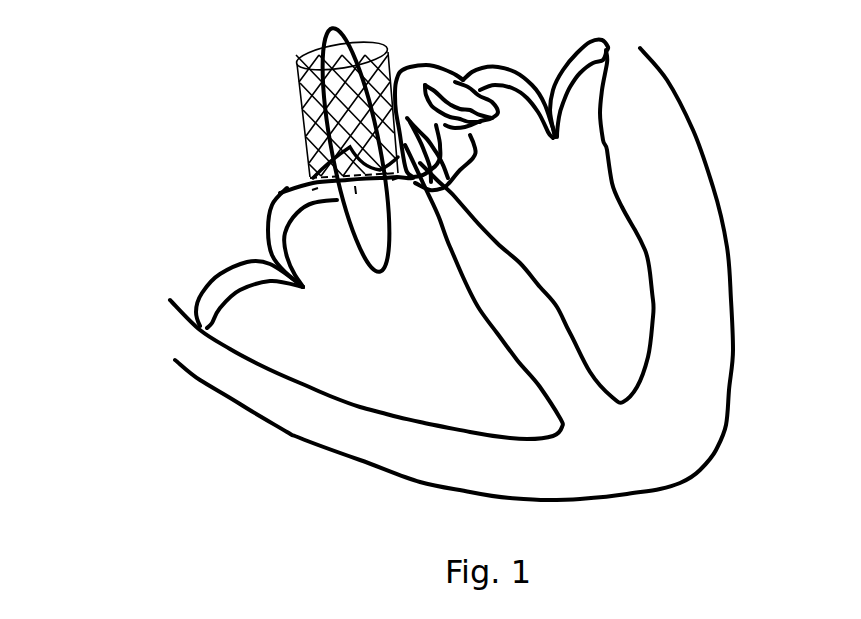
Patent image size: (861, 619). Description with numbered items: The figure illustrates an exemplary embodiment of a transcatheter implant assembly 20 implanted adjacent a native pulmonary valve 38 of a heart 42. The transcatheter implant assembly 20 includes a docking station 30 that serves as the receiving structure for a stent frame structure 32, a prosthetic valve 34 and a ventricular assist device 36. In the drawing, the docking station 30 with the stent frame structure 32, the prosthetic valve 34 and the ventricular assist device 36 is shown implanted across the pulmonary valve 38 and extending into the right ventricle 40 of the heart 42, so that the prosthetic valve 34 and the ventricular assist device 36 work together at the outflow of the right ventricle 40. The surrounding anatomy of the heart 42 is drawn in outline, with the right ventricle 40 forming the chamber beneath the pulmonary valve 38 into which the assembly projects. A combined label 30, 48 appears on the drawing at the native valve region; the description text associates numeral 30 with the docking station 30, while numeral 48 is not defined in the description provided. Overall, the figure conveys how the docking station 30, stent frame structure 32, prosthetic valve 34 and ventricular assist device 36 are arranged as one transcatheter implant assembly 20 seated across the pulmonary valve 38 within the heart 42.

The transcatheter implant assembly 20 is at (215, 170).
The docking station 30 is at (377, 167).
The stent frame structure 32 is at (327, 138).
The prosthetic valve 34 is at (318, 171).
The ventricular assist device 36 is at (325, 43).
The pulmonary valve 38 is at (340, 199).
The right ventricle 40 is at (462, 382).
The heart 42 is at (752, 231).
The aortic root 48 is at (405, 165).